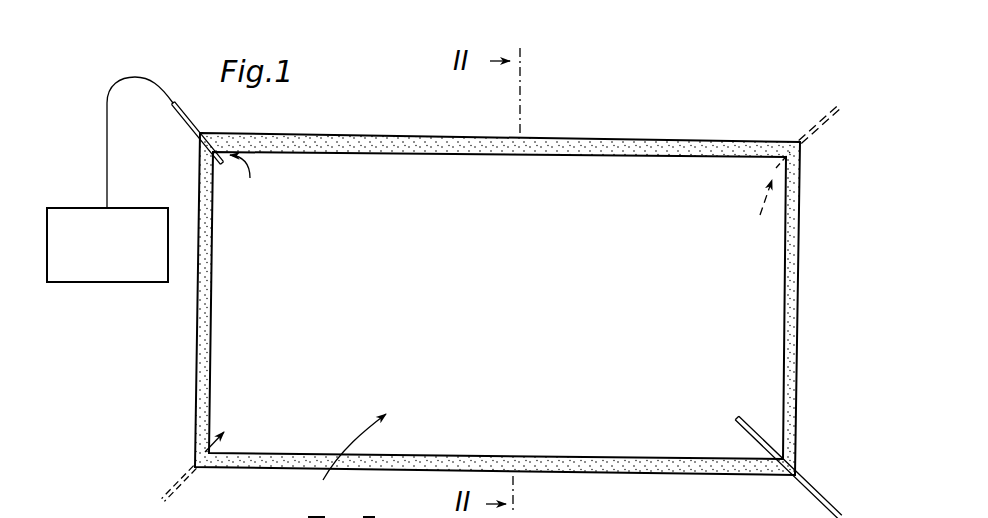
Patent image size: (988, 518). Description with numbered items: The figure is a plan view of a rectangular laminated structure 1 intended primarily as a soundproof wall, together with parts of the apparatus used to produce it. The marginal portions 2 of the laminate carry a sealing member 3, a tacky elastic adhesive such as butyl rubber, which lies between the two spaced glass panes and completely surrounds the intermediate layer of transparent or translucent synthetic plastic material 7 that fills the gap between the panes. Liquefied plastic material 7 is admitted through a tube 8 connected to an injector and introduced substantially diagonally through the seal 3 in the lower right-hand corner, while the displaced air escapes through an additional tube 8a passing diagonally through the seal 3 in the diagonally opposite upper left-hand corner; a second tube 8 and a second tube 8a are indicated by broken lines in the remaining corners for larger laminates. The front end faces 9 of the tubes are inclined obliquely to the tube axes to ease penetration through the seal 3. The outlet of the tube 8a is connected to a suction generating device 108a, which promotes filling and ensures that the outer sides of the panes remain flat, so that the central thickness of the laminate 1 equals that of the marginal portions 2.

The laminated structure 1 is at (520, 281).
The marginal portions 2 is at (520, 300).
The sealing member 3 is at (794, 292).
The synthetic plastic material 7 is at (347, 459).
The tube 8 is at (812, 487).
The additional tube 8a is at (182, 118).
The front end faces 9 is at (497, 302).
The suction generating device 108a is at (137, 279).